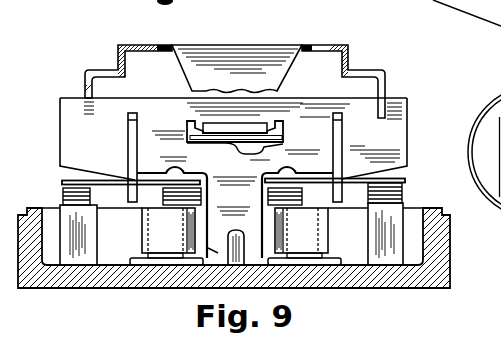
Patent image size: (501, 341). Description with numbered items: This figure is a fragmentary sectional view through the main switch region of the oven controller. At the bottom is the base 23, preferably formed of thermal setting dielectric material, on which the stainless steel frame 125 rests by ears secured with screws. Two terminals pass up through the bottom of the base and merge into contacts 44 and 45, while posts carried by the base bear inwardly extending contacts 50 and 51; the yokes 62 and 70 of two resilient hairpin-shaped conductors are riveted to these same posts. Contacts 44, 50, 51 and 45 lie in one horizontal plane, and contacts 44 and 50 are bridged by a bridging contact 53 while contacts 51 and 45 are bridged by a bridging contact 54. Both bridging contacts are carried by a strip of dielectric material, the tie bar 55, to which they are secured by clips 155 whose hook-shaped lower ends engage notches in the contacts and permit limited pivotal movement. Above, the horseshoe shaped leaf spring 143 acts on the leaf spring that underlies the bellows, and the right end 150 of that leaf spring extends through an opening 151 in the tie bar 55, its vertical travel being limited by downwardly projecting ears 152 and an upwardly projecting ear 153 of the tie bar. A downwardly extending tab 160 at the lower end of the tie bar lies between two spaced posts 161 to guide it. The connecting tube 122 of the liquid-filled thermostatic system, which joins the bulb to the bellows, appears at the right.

The base 23 is at (479, 264).
The contact 44 is at (402, 192).
The contact 45 is at (63, 192).
The contact 50 is at (292, 180).
The contact 51 is at (176, 185).
The bridging contact 53 is at (403, 176).
The bridging contact 54 is at (65, 183).
The strip of dielectric material (tie bar) 55 is at (62, 135).
The yoke 62 is at (313, 228).
The yoke 70 is at (153, 227).
The connecting tube 122 is at (476, 128).
The frame 125 is at (332, 48).
The horseshoe shaped leaf spring 143 is at (275, 55).
The right end of leaf spring 150 is at (278, 139).
The opening 151 is at (229, 127).
The downwardly projecting ears 152 is at (279, 121).
The upwardly projecting ear 153 is at (260, 154).
The clips 155 is at (128, 144).
The downwardly extending tab 160 is at (208, 252).
The posts 161 is at (231, 238).